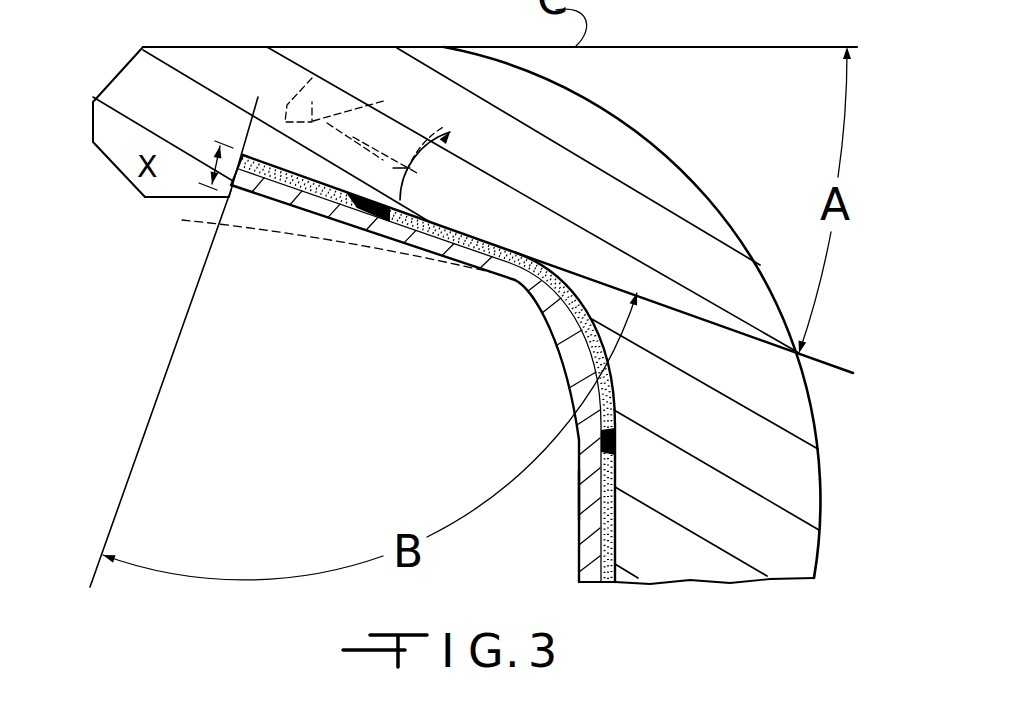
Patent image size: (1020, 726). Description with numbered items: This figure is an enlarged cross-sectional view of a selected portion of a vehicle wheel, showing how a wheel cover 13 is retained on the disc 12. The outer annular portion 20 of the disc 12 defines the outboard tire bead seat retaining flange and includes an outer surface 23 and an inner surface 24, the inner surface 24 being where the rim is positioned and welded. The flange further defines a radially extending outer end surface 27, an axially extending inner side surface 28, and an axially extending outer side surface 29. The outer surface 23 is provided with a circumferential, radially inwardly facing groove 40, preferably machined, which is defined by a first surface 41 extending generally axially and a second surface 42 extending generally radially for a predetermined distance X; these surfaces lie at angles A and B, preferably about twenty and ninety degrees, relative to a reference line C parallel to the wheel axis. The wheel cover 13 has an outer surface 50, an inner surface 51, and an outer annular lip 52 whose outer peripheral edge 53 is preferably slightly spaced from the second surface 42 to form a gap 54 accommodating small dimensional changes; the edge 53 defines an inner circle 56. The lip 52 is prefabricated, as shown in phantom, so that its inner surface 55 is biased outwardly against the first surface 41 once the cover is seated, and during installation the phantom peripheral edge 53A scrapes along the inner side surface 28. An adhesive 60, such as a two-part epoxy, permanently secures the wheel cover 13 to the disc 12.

The disc 12 is at (821, 449).
The wheel cover 13 is at (570, 496).
The outer annular portion 20 is at (636, 130).
The outer surface 23 is at (578, 566).
The inner surface 24 is at (819, 543).
The outer end surface 27 is at (93, 126).
The inner side surface 28 is at (158, 198).
The outer side surface 29 is at (241, 47).
The groove 40 is at (437, 213).
The first surface 41 is at (441, 246).
The second surface 42 is at (234, 190).
The outer surface 50 is at (576, 406).
The inner surface 51 is at (566, 360).
The outer annular lip 52 is at (340, 268).
The outer peripheral edge 53 is at (239, 150).
The peripheral edge 53A is at (182, 222).
The gap 54 is at (247, 126).
The inner surface 55 is at (447, 154).
The inner circle 56 is at (250, 228).
The adhesive 60 is at (612, 583).